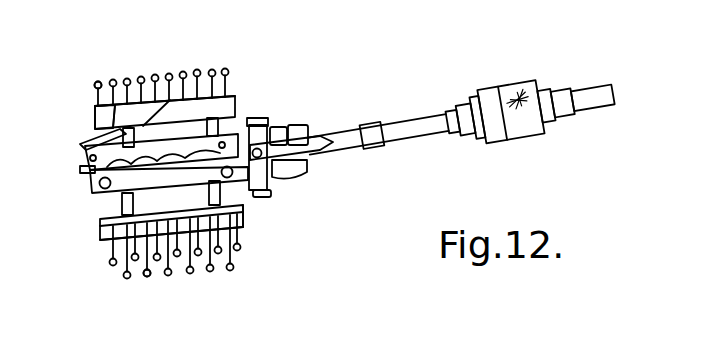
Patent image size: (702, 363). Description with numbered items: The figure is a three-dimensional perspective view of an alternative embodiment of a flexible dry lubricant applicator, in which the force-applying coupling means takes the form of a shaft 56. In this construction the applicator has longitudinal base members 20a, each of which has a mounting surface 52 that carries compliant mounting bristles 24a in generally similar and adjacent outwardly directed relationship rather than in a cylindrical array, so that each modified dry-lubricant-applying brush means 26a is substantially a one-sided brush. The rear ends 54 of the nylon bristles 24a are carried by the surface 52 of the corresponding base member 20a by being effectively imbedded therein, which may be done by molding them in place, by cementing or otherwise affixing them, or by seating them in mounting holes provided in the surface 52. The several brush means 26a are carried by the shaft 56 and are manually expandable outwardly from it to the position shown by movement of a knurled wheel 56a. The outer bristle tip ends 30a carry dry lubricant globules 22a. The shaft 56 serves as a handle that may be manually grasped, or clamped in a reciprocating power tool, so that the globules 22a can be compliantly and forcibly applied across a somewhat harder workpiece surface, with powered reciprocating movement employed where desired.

The longitudinal base member 20a is at (244, 101).
The dry lubricant globules 22a is at (144, 69).
The compliant mounting bristles 24a is at (235, 82).
The dry-lubricant-applying brush means 26a is at (318, 82).
The outer bristle tip ends 30a is at (96, 80).
The mounting surface 52 is at (95, 102).
The rear ends of the bristles 54 is at (100, 137).
The shaft 56 is at (423, 128).
The knurled wheel 56a is at (530, 126).